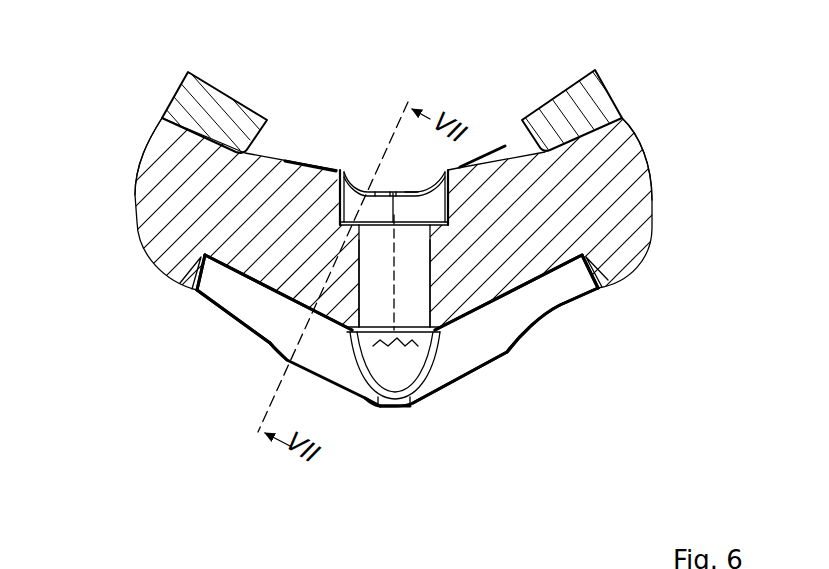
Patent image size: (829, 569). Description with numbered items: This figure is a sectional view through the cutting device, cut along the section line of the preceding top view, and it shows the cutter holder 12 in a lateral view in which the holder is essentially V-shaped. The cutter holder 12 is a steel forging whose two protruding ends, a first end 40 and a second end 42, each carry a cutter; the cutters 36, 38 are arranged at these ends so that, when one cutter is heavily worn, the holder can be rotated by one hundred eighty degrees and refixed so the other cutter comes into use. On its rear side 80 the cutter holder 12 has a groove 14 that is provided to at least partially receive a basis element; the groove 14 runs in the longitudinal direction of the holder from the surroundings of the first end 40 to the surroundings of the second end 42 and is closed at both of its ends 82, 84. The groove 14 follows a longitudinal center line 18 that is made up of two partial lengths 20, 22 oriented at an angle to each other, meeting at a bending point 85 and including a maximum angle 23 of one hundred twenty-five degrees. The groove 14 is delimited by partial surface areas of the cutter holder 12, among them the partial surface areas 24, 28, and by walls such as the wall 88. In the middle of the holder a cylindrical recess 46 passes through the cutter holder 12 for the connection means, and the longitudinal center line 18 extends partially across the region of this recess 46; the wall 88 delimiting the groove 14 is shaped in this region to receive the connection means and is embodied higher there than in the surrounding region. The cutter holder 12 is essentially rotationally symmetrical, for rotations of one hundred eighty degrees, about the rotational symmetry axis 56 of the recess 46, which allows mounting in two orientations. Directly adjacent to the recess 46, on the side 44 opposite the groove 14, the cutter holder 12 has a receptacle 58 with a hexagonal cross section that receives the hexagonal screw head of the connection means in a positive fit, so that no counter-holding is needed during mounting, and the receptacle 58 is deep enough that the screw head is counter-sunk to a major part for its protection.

The cutter holder 12 is at (613, 187).
The groove 14 is at (497, 330).
The longitudinal center line 18 is at (273, 290).
The partial length 20 is at (268, 284).
The partial length 22 is at (508, 290).
The maximum angle 23 is at (398, 352).
The partial surface area 24 is at (447, 368).
The partial surface area 28 is at (289, 333).
The cutter 36 is at (605, 82).
The cutter 38 is at (213, 108).
The first end 40 is at (655, 128).
The second end 42 is at (131, 159).
The side opposite the groove 44 is at (477, 131).
The recess 46 is at (381, 293).
The rotational symmetry axis 56 is at (395, 253).
The receptacle 58 is at (418, 207).
The rear side 80 is at (402, 421).
The end of the groove 82 is at (577, 281).
The end of the groove 84 is at (210, 283).
The bending point 85 is at (385, 421).
The wall 88 is at (483, 358).